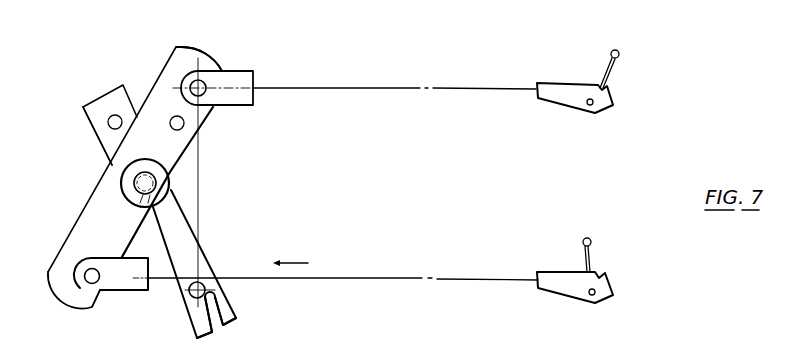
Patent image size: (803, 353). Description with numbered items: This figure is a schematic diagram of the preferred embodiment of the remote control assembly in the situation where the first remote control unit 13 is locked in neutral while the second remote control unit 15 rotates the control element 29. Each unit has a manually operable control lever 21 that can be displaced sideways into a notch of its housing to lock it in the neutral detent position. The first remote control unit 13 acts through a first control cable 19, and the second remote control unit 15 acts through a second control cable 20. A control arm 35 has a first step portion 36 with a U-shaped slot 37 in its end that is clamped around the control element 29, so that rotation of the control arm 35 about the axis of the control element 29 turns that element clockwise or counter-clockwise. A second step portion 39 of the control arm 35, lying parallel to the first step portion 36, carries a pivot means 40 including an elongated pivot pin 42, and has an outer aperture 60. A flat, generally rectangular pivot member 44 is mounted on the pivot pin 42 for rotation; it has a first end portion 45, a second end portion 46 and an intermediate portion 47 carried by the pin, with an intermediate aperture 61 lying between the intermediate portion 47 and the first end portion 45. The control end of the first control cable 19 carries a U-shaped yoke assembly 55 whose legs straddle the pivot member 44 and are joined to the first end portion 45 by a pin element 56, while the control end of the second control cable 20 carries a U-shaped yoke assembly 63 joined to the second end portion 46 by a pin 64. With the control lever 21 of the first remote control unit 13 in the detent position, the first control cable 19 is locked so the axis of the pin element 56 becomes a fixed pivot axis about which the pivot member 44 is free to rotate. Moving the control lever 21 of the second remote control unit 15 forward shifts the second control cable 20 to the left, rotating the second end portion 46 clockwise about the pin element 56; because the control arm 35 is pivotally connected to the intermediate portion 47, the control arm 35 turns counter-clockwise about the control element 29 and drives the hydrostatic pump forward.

The first remote control unit 13 is at (565, 68).
The second remote control unit 15 is at (558, 256).
The first control cable 19 is at (397, 88).
The second control cable 20 is at (412, 278).
The control lever 21 is at (609, 72).
The control element 29 is at (215, 290).
The control arm 35 is at (182, 195).
The first step portion 36 is at (226, 310).
The U-shaped slot 37 is at (215, 330).
The second step portion 39 is at (117, 91).
The pivot means 40 is at (182, 175).
The pivot pin 42 is at (140, 181).
The pivot member 44 is at (170, 46).
The first end portion 45 is at (193, 46).
The second end portion 46 is at (63, 256).
The intermediate portion 47 is at (112, 165).
The U-shaped yoke assembly 55 is at (248, 75).
The pin element 56 is at (199, 84).
The outer aperture 60 is at (110, 116).
The intermediate aperture 61 is at (183, 125).
The U-shaped yoke assembly 63 is at (125, 285).
The pin 64 is at (91, 278).